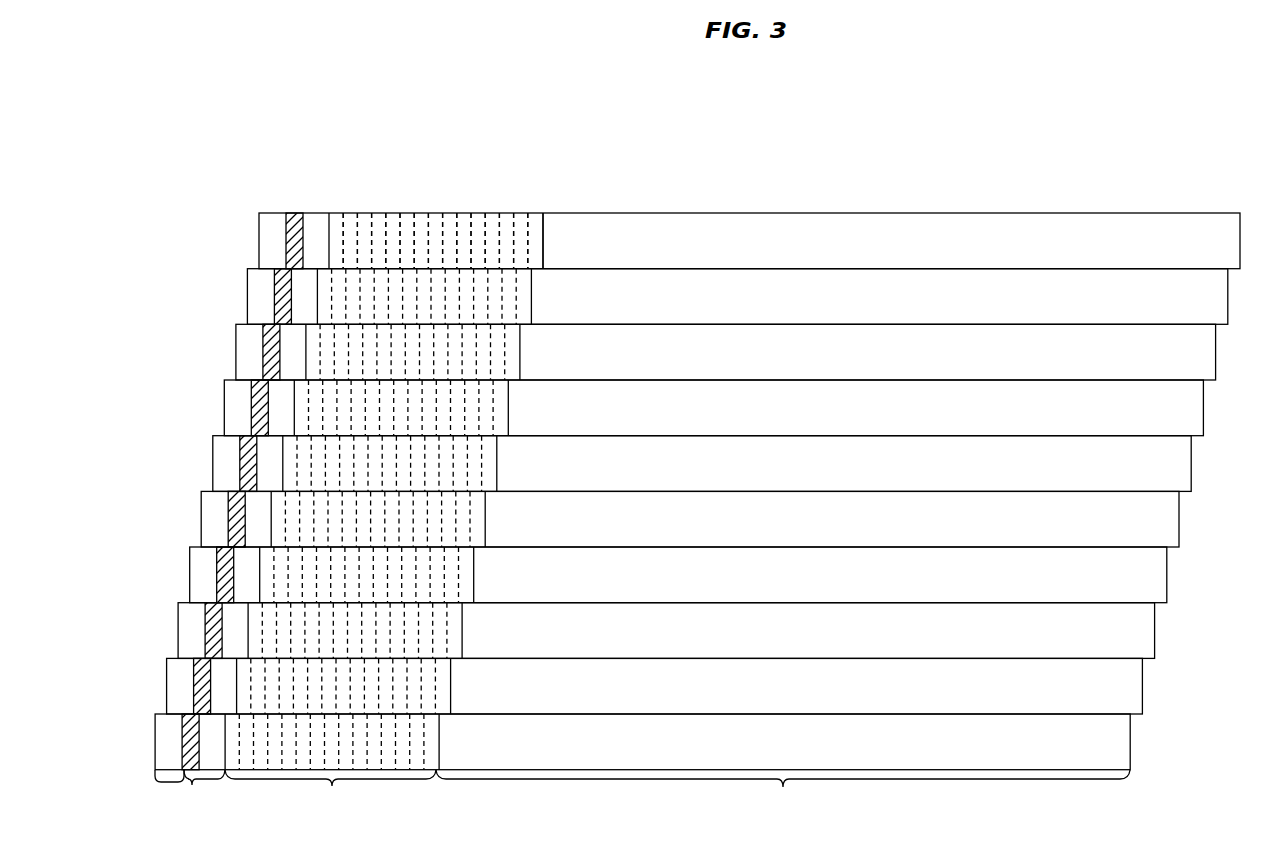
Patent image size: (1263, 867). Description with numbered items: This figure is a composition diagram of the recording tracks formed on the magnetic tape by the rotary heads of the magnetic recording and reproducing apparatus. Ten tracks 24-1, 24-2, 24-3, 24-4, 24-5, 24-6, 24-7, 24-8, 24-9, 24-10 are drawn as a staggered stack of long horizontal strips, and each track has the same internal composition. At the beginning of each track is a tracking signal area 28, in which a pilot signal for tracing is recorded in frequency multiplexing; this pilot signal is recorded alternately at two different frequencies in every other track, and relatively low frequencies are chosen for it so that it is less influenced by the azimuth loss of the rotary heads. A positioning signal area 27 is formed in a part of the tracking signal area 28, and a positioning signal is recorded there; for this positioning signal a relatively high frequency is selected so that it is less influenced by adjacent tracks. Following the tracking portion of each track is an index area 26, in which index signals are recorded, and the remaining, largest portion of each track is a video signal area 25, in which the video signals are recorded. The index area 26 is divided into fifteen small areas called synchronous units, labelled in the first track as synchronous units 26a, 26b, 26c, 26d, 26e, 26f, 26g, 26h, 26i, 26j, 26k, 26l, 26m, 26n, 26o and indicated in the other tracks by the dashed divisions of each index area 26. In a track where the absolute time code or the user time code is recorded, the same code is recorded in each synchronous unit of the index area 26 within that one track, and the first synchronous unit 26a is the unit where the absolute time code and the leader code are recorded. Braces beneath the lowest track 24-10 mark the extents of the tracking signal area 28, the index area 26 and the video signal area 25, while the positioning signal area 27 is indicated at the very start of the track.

The track 24-1 is at (708, 241).
The track 24-2 is at (695, 297).
The track 24-3 is at (684, 352).
The track 24-4 is at (672, 408).
The track 24-5 is at (660, 464).
The track 24-6 is at (648, 519).
The track 24-7 is at (637, 575).
The track 24-8 is at (625, 631).
The track 24-9 is at (613, 686).
The track 24-10 is at (597, 742).
The synchronous unit 26a is at (335, 212).
The synchronous unit 26b is at (350, 212).
The synchronous unit 26c is at (364, 212).
The synchronous unit 26d is at (379, 212).
The synchronous unit 26e is at (394, 212).
The synchronous unit 26f is at (408, 212).
The synchronous unit 26g is at (423, 212).
The synchronous unit 26h is at (438, 212).
The synchronous unit 26i is at (453, 212).
The synchronous unit 26j is at (467, 212).
The synchronous unit 26k is at (482, 212).
The synchronous unit 26l is at (497, 212).
The synchronous unit 26m is at (511, 212).
The synchronous unit 26n is at (526, 212).
The synchronous unit 26o is at (541, 212).
The video signal area 25 is at (783, 796).
The index area 26 is at (330, 795).
The positioning signal area 27 is at (172, 782).
The tracking signal area 28 is at (201, 795).